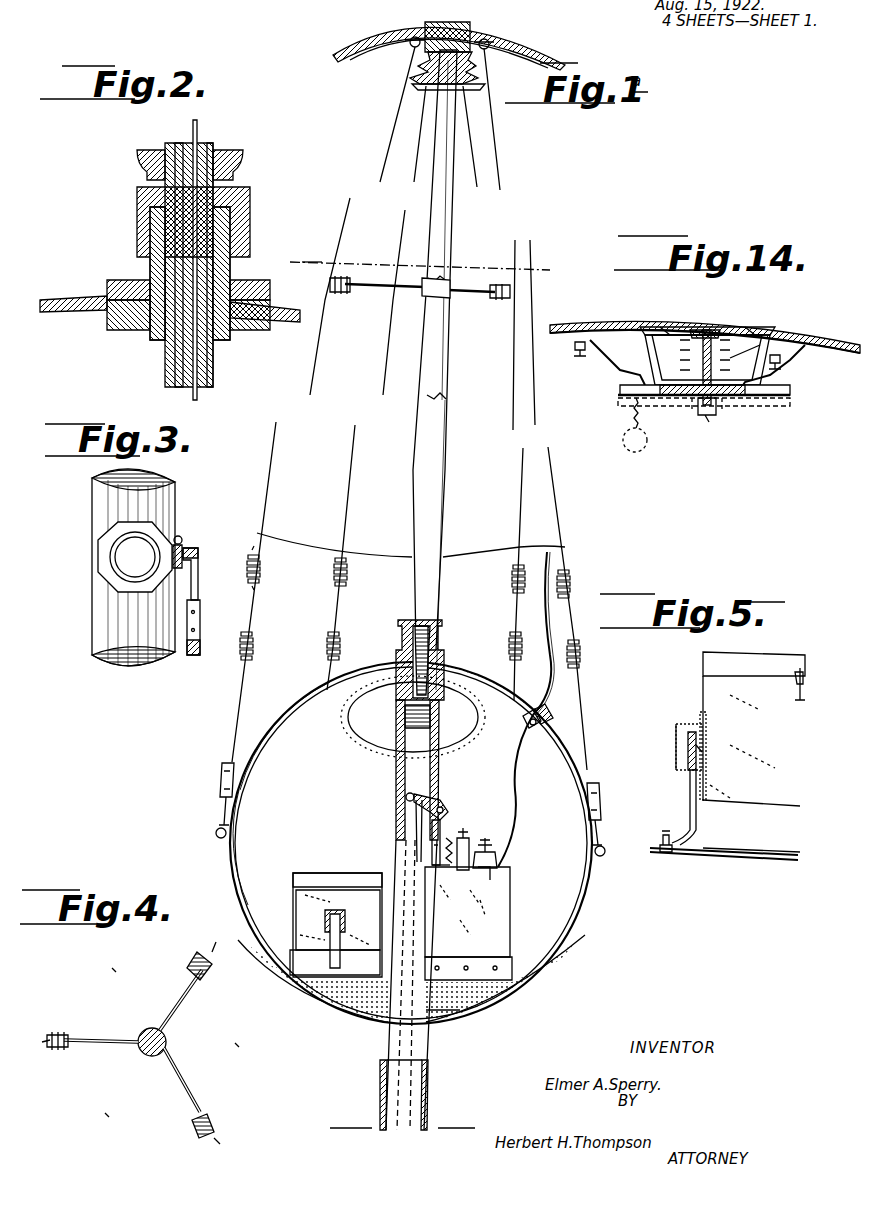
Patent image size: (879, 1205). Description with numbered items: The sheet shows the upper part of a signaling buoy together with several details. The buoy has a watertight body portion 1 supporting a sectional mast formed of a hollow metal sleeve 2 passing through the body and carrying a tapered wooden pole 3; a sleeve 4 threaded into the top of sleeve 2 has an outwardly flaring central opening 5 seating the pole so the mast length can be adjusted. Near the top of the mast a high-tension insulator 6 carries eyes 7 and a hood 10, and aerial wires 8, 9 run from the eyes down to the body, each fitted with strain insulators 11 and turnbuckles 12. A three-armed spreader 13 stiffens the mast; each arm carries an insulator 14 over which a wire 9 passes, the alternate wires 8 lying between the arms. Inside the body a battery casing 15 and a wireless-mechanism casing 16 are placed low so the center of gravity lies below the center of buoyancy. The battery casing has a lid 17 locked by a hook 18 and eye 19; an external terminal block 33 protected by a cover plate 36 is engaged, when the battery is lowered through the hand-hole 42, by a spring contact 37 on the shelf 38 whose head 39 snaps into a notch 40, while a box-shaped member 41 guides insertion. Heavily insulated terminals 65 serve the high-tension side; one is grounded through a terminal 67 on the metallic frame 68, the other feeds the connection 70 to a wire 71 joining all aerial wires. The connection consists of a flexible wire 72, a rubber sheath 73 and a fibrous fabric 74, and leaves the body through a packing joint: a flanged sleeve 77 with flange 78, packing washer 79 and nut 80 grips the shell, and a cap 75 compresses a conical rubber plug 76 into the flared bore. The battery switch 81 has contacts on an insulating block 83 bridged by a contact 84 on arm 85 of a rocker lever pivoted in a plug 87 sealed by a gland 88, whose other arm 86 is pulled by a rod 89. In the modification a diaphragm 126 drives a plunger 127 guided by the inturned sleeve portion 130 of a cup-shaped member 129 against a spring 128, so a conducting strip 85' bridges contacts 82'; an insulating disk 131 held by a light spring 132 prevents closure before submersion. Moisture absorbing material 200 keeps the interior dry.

In FIG. 1A, the watertight body portion 1 is at (411, 843).
In FIG. 2, the watertight body portion 1 is at (62, 300).
In FIG. 14, the watertight body portion 1 is at (780, 338).
In FIG. 1A, the hollow metal sleeve 2 is at (424, 1082).
In FIG. 1A, the pole 3 is at (446, 462).
In FIG. 1A, the sleeve 4 is at (432, 617).
In FIG. 2, the sleeve 4 is at (305, 262).
In FIG. 1A, the outwardly flaring central opening 5 is at (442, 640).
In FIG. 1A, the high-tension insulator 6 is at (462, 88).
In FIG. 1A, the eyes 7 is at (487, 47).
In FIG. 1A, the aerial wires 8 is at (517, 900).
In FIG. 4, the aerial wires 8 is at (110, 1120).
In FIG. 1A, the aerial wires 9 is at (521, 480).
In FIG. 4, the aerial wires 9 is at (126, 1044).
In FIG. 1A, the hood 10 is at (530, 50).
In FIG. 1A, the strain insulators 11 is at (588, 650).
In FIG. 1A, the turnbuckles 12 is at (601, 810).
In FIG. 1A, the spreader 13 is at (470, 294).
In FIG. 4, the spreader 13 is at (180, 1083).
In FIG. 1A, the insulator 14 is at (502, 300).
In FIG. 4, the insulator 14 is at (207, 1120).
In FIG. 1A, the casing 15 is at (338, 920).
In FIG. 5, the casing 15 is at (749, 746).
In FIG. 1A, the casing 16 is at (467, 912).
In FIG. 1A, the lid or cover 17 is at (335, 871).
In FIG. 5, the lid or cover 17 is at (755, 650).
In FIG. 5, the hook 18 is at (797, 685).
In FIG. 5, the eye 19 is at (793, 672).
In FIG. 5, the terminal block 33 is at (696, 726).
In FIG. 1A, the cover plate 36 is at (345, 912).
In FIG. 5, the cover plate 36 is at (676, 742).
In FIG. 5, the spring contacts 37 is at (688, 790).
In FIG. 1A, the base or shelf 38 is at (411, 978).
In FIG. 5, the base or shelf 38 is at (728, 857).
In FIG. 5, the head 39 is at (697, 742).
In FIG. 5, the notch 40 is at (702, 752).
In FIG. 1A, the box-shaped member 41 is at (335, 962).
In FIG. 5, the box-shaped member 41 is at (730, 826).
In FIG. 1A, the hand-hole 42 is at (365, 740).
In FIG. 1A, the heavily insulated terminals 65 is at (486, 880).
In FIG. 1A, the terminal 67 is at (466, 970).
In FIG. 1A, the metallic frame 68 is at (515, 955).
In FIG. 1A, the connection 70 is at (520, 772).
In FIG. 1A, the wire 71 is at (374, 548).
In FIG. 2, the flexible wire 72 is at (193, 136).
In FIG. 2, the sheath 73 is at (208, 145).
In FIG. 2, the fibrous fabric 74 is at (222, 152).
In FIG. 1A, the cap 75 is at (553, 718).
In FIG. 2, the cap 75 is at (133, 155).
In FIG. 2, the plug 76 is at (137, 208).
In FIG. 1A, the sleeve 77 is at (528, 724).
In FIG. 2, the sleeve 77 is at (232, 272).
In FIG. 2, the flange 78 is at (117, 285).
In FIG. 2, the packing washer 79 is at (268, 332).
In FIG. 1A, the nut 80 is at (527, 716).
In FIG. 2, the nut 80 is at (128, 332).
In FIG. 1A, the switch 81 is at (465, 828).
In FIG. 14, the contacts 82' is at (695, 366).
In FIG. 1A, the block 83 is at (480, 838).
In FIG. 1A, the bridging contact 84 is at (436, 868).
In FIG. 3, the bridging contact 84 is at (200, 640).
In FIG. 1A, the arm 85 is at (451, 825).
In FIG. 3, the arm 85 is at (204, 574).
In FIG. 14, the conducting strip 85' is at (704, 411).
In FIG. 1A, the outer arm 86 is at (407, 785).
In FIG. 1A, the plug 87 is at (438, 797).
In FIG. 3, the plug 87 is at (133, 568).
In FIG. 3, the stuffing box or gland 88 is at (181, 540).
In FIG. 1A, the rod 89 is at (416, 830).
In FIG. 14, the diaphragm 126 is at (665, 326).
In FIG. 14, the plunger 127 is at (730, 328).
In FIG. 14, the spring 128 is at (705, 325).
In FIG. 14, the cup-shaped member 129 is at (648, 357).
In FIG. 14, the inturned sleeve portion 130 is at (744, 355).
In FIG. 14, the disk of insulation 131 is at (643, 450).
In FIG. 14, the spring 132 is at (710, 410).
In FIG. 1A, the moisture absorbing material 200 is at (455, 1018).